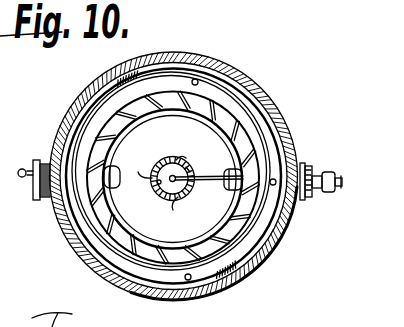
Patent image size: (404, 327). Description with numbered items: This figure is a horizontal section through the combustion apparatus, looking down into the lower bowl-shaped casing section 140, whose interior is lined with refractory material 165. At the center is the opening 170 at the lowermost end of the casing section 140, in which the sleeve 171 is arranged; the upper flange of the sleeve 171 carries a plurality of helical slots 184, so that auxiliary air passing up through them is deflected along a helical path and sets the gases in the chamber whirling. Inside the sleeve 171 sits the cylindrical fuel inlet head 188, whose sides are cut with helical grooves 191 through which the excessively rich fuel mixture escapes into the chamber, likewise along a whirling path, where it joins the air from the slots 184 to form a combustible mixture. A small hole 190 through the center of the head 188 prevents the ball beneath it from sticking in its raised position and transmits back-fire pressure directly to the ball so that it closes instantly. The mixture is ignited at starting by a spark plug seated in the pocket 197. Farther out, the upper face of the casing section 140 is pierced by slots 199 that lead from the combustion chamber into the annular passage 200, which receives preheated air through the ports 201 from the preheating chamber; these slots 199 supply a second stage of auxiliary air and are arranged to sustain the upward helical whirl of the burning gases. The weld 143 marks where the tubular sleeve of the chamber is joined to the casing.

The lower bowl-shaped casing section 140 is at (211, 278).
The weld 143 is at (193, 191).
The refractory material lining 165 is at (123, 221).
The opening 170 is at (138, 172).
The sleeve 171 is at (181, 158).
The helical slots 184 is at (173, 156).
The fuel inlet head 188 is at (173, 210).
The small hole 190 is at (157, 183).
The helical grooves 191 is at (186, 167).
The spark plug pocket 197 is at (265, 263).
The slots 199 is at (249, 137).
The annular passage 200 is at (268, 146).
The ports 201 is at (197, 80).